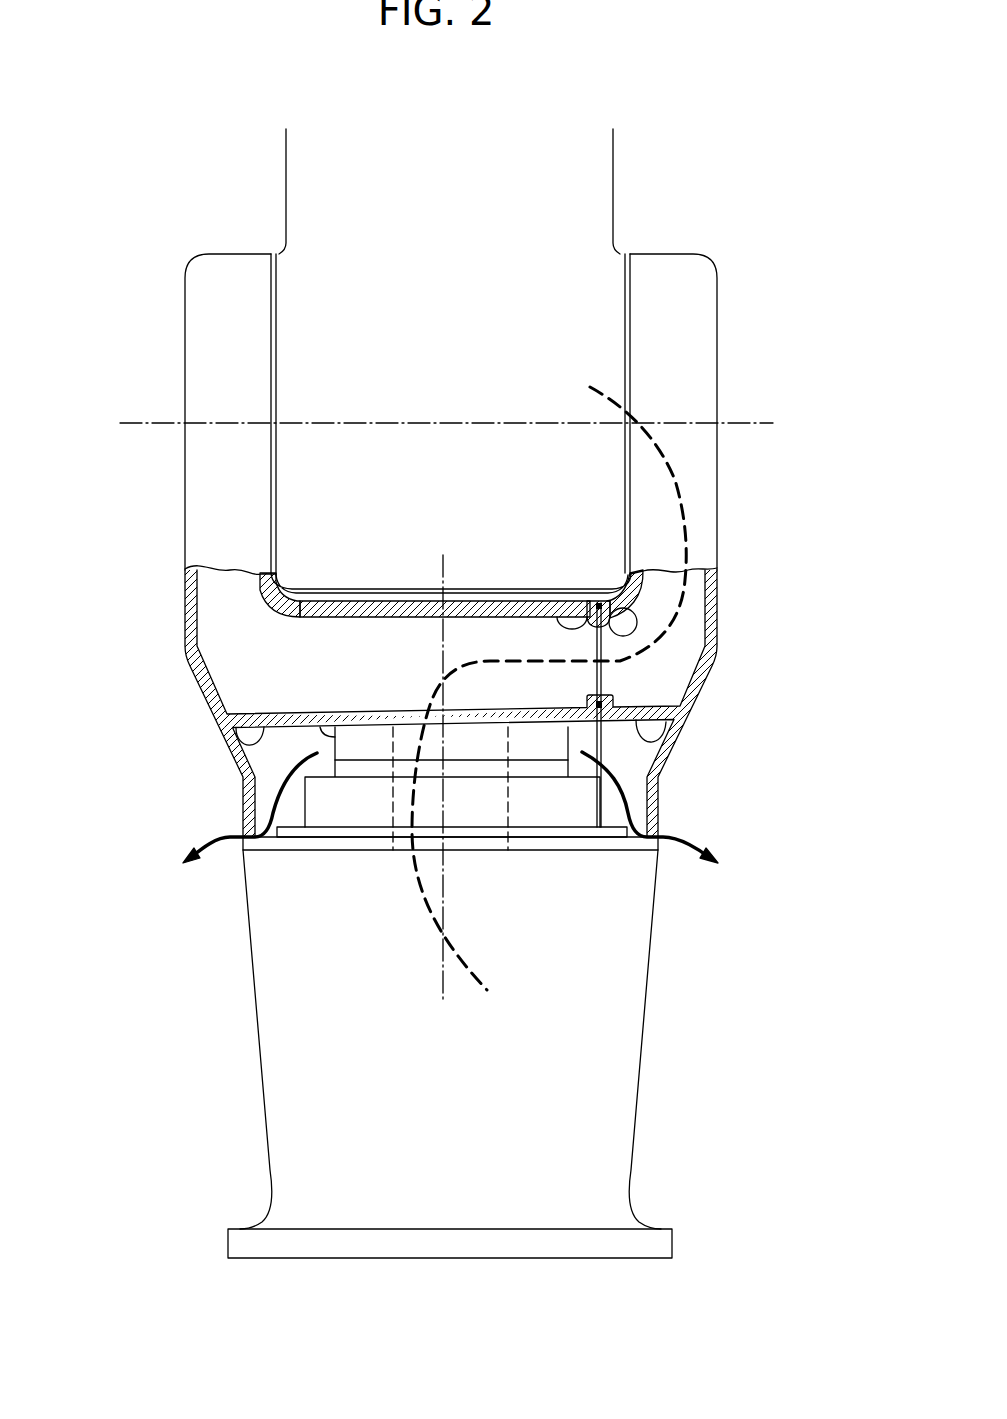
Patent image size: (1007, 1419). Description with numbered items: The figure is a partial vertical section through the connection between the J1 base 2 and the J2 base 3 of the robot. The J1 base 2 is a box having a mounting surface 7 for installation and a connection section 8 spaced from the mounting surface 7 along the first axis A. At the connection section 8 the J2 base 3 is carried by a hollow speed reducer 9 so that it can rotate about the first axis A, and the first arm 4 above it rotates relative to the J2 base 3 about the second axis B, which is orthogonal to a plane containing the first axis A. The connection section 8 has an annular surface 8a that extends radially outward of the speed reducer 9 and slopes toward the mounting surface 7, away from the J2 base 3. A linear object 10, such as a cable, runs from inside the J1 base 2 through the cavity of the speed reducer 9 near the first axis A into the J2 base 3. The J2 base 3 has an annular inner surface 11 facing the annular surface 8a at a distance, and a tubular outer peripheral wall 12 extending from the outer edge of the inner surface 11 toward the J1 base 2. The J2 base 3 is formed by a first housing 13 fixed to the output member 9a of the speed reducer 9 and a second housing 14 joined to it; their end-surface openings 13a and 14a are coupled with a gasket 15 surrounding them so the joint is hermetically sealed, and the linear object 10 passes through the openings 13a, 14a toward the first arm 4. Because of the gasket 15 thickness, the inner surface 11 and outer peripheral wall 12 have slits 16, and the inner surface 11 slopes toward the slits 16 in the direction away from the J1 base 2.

The J1 base 2 is at (258, 1025).
The J2 base 3 is at (183, 583).
The first arm 4 is at (284, 185).
The mounting surface 7 is at (422, 1260).
The connection section 8 is at (663, 847).
The annular surface 8a is at (287, 822).
The speed reducer 9 is at (552, 820).
The output member 9a is at (327, 740).
The linear object 10 is at (677, 498).
The annular inner surface 11 is at (240, 738).
The tubular outer peripheral wall 12 is at (242, 808).
The first housing 13 is at (183, 627).
The opening 13a is at (565, 640).
The second housing 14 is at (718, 590).
The opening 14a is at (622, 587).
The gasket 15 is at (613, 698).
The slit 16 is at (597, 737).
The first axis A is at (443, 990).
The second axis B is at (147, 423).